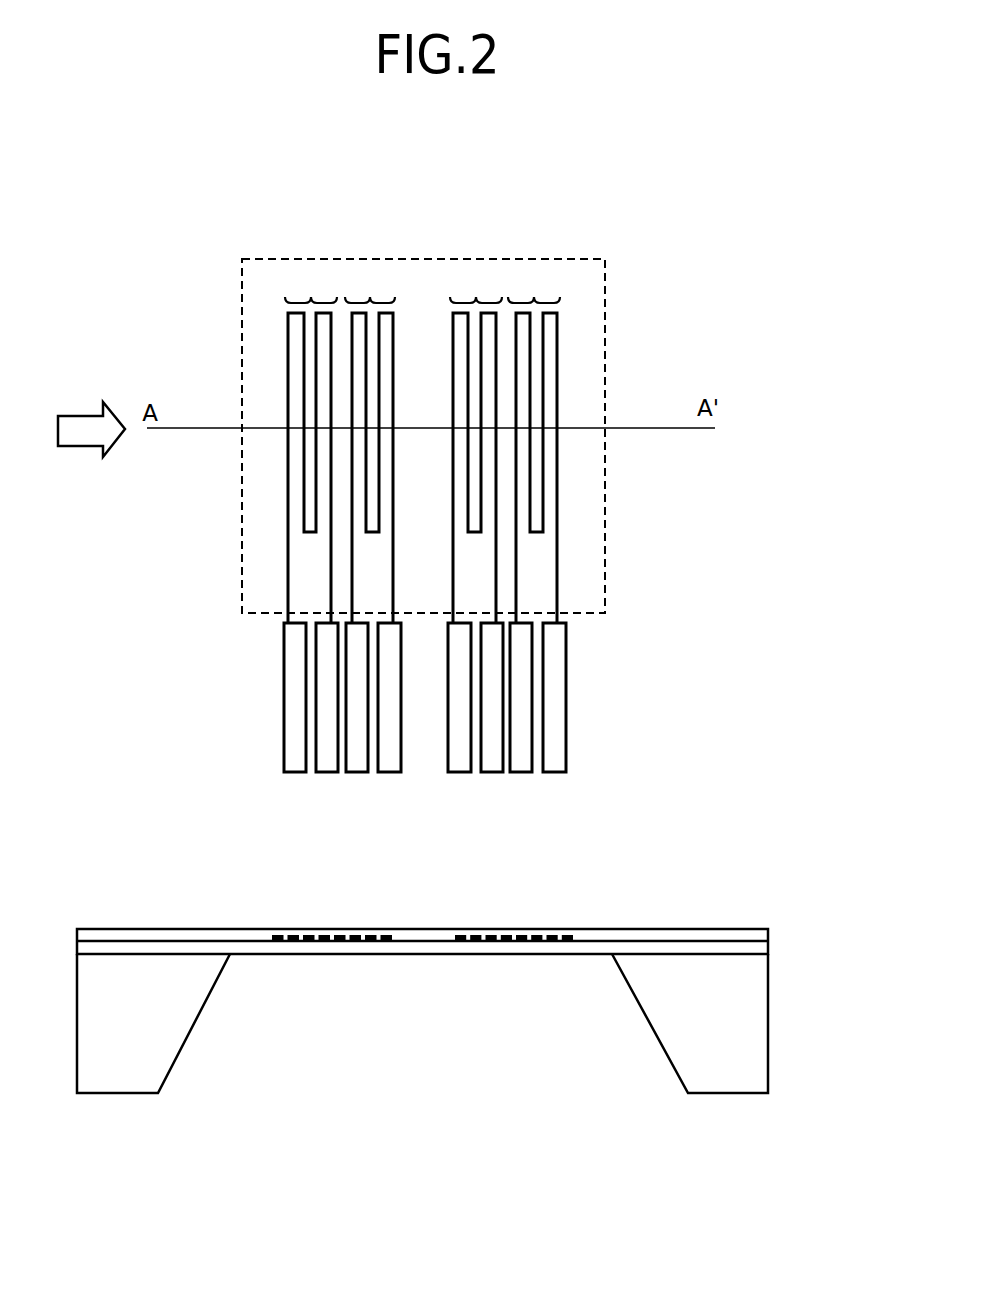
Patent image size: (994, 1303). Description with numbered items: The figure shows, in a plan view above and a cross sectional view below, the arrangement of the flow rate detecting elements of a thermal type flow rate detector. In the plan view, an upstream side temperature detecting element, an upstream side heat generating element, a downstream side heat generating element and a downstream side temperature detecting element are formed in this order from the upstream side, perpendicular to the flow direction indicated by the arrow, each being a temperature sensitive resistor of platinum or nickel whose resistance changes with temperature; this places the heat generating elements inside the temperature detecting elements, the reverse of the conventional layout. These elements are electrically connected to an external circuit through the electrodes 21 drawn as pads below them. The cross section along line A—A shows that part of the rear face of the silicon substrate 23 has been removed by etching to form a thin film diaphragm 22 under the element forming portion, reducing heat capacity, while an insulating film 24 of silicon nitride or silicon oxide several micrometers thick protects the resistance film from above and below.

The electrode 21 is at (567, 727).
The diaphragm 22 is at (605, 389).
The silicon substrate 23 is at (748, 1003).
The insulating film 24 is at (773, 954).